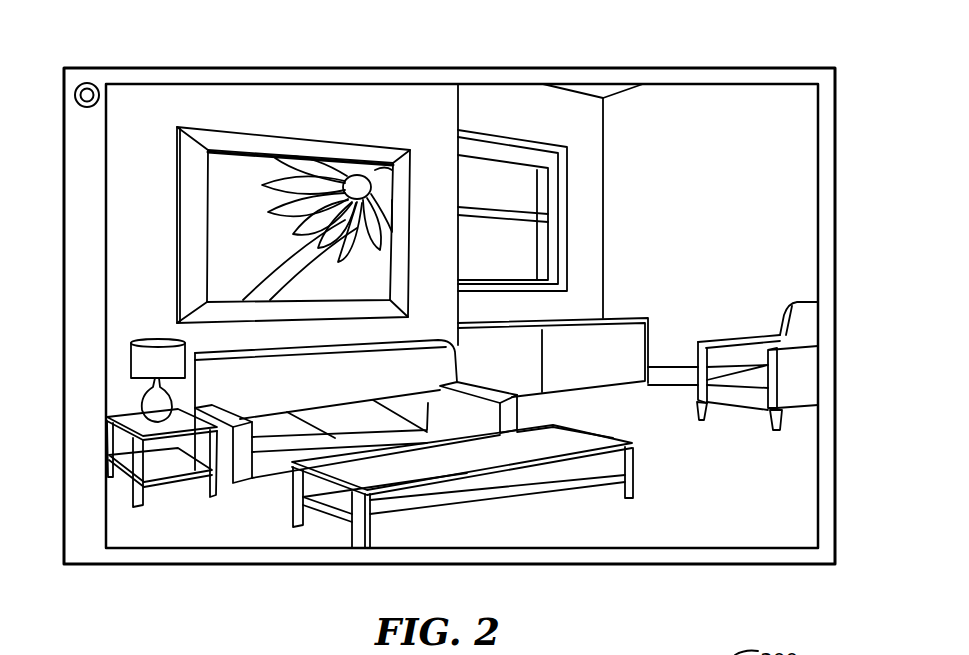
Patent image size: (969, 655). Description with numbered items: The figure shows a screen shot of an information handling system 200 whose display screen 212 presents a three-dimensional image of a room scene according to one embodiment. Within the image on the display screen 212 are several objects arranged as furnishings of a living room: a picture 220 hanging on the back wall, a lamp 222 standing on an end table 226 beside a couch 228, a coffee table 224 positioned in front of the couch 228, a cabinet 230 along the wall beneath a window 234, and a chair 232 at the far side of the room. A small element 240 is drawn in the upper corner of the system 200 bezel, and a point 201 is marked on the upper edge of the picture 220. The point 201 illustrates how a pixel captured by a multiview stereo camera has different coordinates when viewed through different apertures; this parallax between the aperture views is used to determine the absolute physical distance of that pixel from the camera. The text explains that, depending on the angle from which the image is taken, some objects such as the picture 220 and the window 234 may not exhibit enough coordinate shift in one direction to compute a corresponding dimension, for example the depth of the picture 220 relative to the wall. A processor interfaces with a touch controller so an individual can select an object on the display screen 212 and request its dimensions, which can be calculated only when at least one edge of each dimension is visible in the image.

The information handling system 200 is at (695, 42).
The display screen 212 is at (743, 84).
The camera / sensor 240 is at (93, 83).
The picture 220 is at (295, 214).
The point 201 is at (410, 151).
The window 234 is at (530, 257).
The cabinet 230 is at (510, 332).
The chair 232 is at (803, 372).
The couch 228 is at (322, 361).
The end table 226 is at (128, 415).
The lamp 222 is at (178, 346).
The coffee table 224 is at (465, 473).